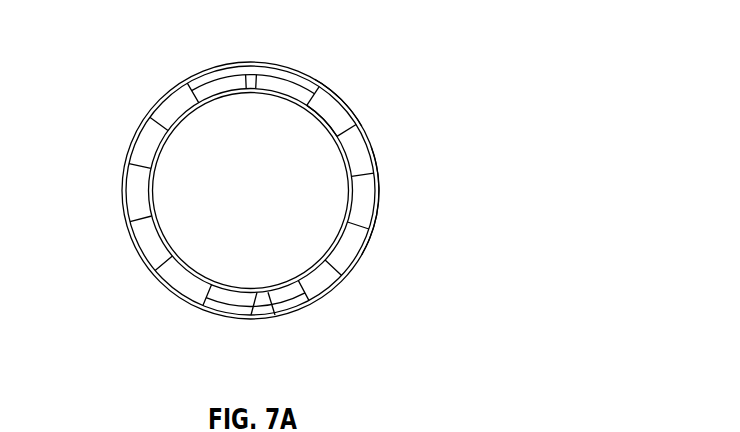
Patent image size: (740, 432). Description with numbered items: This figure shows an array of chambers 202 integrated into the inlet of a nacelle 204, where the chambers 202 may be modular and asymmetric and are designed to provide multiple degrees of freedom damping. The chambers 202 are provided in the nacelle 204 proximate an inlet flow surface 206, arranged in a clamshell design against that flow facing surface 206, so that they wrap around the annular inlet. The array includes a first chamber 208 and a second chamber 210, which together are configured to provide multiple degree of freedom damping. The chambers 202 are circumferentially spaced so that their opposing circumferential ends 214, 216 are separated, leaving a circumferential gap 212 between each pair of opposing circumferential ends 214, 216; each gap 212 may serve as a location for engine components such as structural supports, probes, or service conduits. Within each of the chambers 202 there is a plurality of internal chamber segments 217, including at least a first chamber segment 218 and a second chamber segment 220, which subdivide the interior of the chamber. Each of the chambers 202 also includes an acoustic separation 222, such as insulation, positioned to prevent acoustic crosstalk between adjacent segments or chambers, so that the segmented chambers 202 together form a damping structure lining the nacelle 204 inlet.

The chambers 202 is at (121, 56).
The nacelle 204 is at (133, 142).
The inlet flow surface 206 is at (143, 182).
The first chamber 208 is at (145, 250).
The second chamber 210 is at (379, 206).
The circumferential gap 212 is at (264, 304).
The opposing circumferential end 214 is at (273, 316).
The opposing circumferential end 216 is at (254, 316).
The internal chamber segments 217 is at (359, 80).
The first chamber segment 218 is at (262, 83).
The second chamber segment 220 is at (332, 118).
The acoustic separation 222 is at (312, 102).